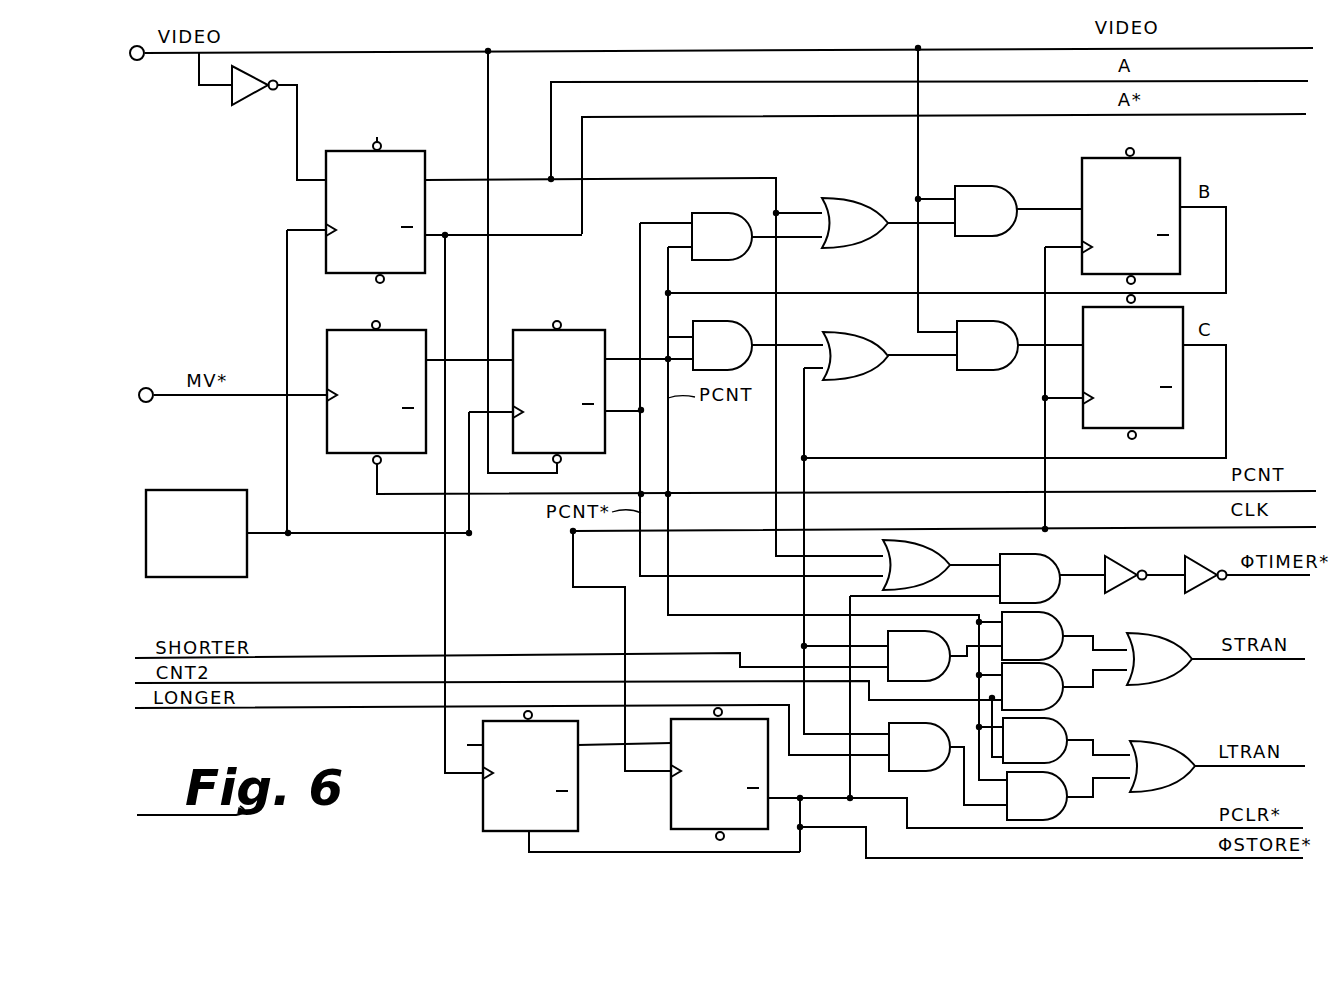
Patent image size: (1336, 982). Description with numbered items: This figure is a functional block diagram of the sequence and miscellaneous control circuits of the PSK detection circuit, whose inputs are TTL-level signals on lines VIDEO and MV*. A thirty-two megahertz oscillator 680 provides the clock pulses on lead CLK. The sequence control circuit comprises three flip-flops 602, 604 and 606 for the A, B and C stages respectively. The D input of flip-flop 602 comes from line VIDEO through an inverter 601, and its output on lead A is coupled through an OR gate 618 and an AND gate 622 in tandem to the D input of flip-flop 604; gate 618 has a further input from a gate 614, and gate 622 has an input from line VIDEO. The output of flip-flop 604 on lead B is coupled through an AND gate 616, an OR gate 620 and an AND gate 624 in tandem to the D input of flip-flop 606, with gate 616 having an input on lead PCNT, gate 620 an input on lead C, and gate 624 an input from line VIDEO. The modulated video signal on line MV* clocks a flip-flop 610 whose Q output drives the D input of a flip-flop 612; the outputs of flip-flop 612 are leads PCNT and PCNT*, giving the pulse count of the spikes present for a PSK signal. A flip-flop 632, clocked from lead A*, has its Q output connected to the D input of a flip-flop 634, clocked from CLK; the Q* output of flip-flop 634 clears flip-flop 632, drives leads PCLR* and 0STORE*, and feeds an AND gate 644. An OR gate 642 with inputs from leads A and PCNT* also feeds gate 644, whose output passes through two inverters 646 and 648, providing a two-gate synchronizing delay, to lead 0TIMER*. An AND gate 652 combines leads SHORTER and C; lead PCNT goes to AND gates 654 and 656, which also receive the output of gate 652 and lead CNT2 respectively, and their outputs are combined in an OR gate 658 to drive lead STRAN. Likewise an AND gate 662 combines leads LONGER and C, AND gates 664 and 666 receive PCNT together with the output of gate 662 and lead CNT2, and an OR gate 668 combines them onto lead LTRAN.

The inverter 601 is at (251, 100).
The flip-flop 602 is at (355, 151).
The flip-flop 604 is at (1155, 158).
The flip-flop 606 is at (1183, 312).
The flip-flop 610 is at (345, 330).
The flip-flop 612 is at (528, 330).
The gate 614 is at (705, 213).
The AND gate 616 is at (708, 321).
The OR gate 618 is at (850, 198).
The OR gate 620 is at (858, 332).
The AND gate 622 is at (978, 186).
The AND gate 624 is at (1000, 370).
The flip-flop 632 is at (483, 803).
The flip-flop 634 is at (768, 780).
The OR gate 642 is at (945, 558).
The AND gate 644 is at (1045, 556).
The inverter 646 is at (1117, 560).
The inverter 648 is at (1198, 560).
The AND gate 652 is at (950, 646).
The AND gate 654 is at (1050, 618).
The AND gate 656 is at (1057, 698).
The OR gate 658 is at (1150, 640).
The AND gate 662 is at (922, 728).
The AND gate 664 is at (1060, 808).
The AND gate 666 is at (1058, 728).
The OR gate 668 is at (1155, 744).
The 32-MHz oscillator 680 is at (175, 490).